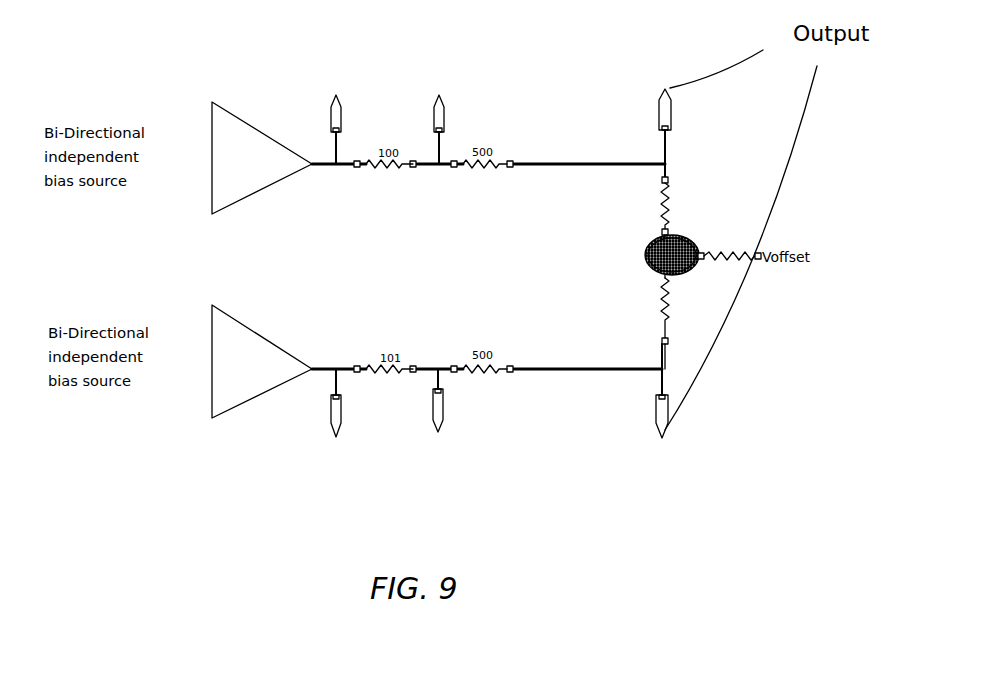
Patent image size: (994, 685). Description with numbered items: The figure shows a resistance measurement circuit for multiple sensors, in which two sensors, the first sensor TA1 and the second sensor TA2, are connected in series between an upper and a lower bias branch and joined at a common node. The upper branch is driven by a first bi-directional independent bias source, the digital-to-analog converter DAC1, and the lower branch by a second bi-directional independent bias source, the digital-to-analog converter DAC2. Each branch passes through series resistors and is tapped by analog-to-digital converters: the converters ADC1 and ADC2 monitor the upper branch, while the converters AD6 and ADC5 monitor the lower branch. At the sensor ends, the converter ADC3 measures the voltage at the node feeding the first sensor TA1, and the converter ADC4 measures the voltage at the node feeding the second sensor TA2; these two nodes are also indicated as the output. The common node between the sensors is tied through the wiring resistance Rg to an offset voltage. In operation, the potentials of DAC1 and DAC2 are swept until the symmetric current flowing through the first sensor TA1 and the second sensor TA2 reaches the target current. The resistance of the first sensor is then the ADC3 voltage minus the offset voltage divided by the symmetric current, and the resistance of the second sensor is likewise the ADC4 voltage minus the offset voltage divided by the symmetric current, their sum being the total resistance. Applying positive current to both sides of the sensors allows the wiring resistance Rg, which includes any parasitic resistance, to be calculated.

The first digital-to-analog converter DAC1 is at (262, 158).
The second digital-to-analog converter DAC2 is at (262, 361).
The first analog-to-digital converter ADC1 is at (333, 120).
The second analog-to-digital converter ADC2 is at (438, 120).
The third analog-to-digital converter ADC3 is at (635, 114).
The fourth analog-to-digital converter ADC4 is at (640, 408).
The fifth analog-to-digital converter ADC5 is at (437, 408).
The sixth analog-to-digital converter AD6 is at (321, 410).
The first sensor TA1 is at (636, 207).
The second sensor TA2 is at (636, 322).
The wiring resistance Rg is at (729, 238).